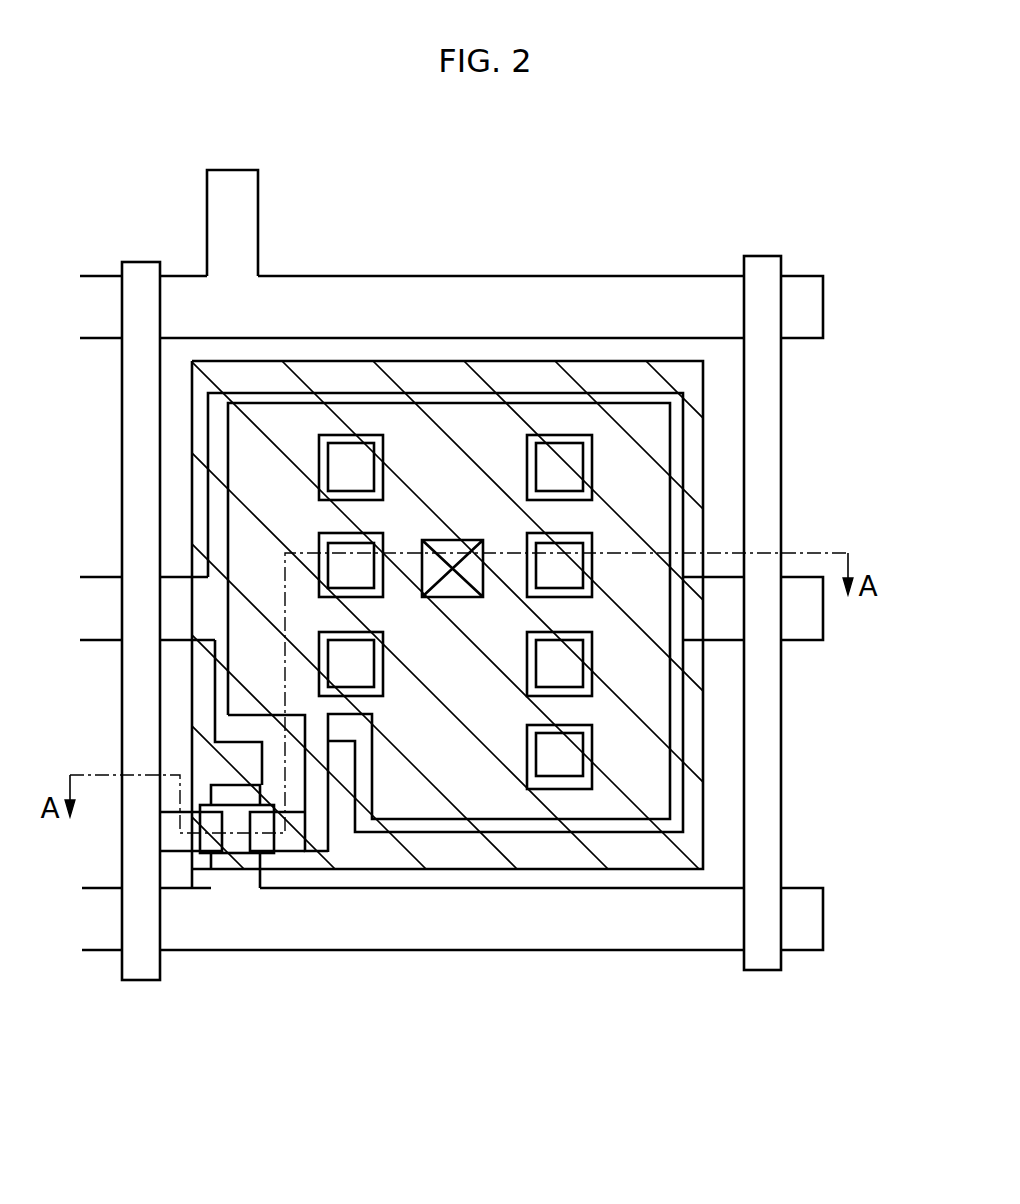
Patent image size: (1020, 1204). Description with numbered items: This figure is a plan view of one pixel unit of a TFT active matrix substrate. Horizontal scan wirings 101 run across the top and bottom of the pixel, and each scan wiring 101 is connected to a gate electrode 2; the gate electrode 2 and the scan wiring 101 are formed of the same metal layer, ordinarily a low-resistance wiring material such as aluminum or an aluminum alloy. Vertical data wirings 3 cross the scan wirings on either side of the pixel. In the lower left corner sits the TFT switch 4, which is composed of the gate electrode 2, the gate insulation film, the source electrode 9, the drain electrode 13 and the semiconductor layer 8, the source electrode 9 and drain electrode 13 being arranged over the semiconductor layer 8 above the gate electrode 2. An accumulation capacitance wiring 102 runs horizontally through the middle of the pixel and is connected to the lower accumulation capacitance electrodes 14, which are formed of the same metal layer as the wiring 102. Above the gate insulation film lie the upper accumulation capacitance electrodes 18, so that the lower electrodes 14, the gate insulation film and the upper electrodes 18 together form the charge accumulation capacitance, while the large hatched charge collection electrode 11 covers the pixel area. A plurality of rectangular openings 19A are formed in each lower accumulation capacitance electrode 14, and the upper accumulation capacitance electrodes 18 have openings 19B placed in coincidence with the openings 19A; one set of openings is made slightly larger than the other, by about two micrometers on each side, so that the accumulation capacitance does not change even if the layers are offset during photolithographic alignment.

The gate electrode 2 is at (254, 190).
The data wirings 3 is at (140, 268).
The TFT switch 4 is at (250, 780).
The semiconductor layer 8 is at (240, 840).
The source electrode 9 is at (182, 842).
The charge collection electrode 11 is at (485, 370).
The drain electrode 13 is at (267, 837).
The lower accumulation capacitance electrodes 14 is at (553, 400).
The upper accumulation capacitance electrodes 18 is at (631, 413).
The rectangular openings 19A is at (570, 587).
The openings 19B is at (578, 534).
The scan wiring 101 is at (812, 305).
The accumulation capacitance wiring 102 is at (813, 633).